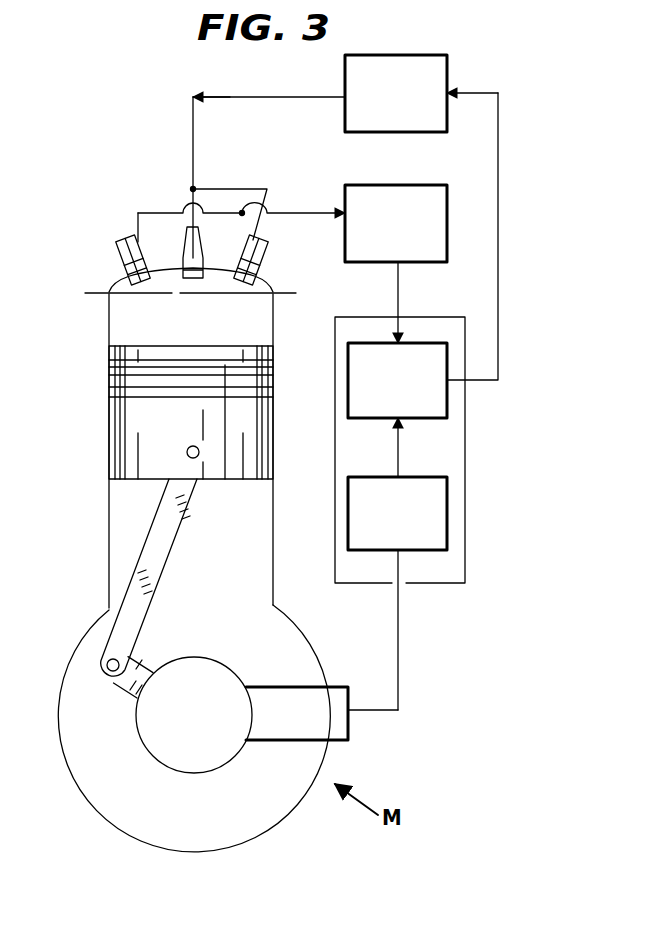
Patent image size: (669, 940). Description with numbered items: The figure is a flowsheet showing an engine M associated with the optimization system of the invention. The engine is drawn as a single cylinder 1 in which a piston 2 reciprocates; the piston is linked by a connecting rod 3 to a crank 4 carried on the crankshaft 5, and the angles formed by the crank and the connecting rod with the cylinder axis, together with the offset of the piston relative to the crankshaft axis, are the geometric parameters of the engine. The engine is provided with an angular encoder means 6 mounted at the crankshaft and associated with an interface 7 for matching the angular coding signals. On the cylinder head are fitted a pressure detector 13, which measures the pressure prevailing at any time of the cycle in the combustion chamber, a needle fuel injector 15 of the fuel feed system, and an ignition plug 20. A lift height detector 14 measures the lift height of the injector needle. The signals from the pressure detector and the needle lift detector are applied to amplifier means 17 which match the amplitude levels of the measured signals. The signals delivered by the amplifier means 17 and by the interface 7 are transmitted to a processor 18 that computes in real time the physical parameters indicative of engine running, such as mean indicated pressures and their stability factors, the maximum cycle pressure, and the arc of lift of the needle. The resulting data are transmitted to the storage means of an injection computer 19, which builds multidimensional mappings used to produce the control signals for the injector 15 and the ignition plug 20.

The cylinder 1 is at (250, 324).
The piston 2 is at (273, 400).
The connecting rod 3 is at (167, 550).
The crank 4 is at (127, 687).
The crankshaft 5 is at (165, 752).
The angular encoder means 6 is at (345, 740).
The interface 7 is at (447, 500).
The pressure detector 13 is at (124, 237).
The lift height detector 14 is at (268, 210).
The needle fuel injector 15 is at (268, 268).
The amplifier means 17 is at (447, 203).
The processor 18 is at (425, 585).
The injection computer 19 is at (447, 75).
The ignition plug 20 is at (185, 233).